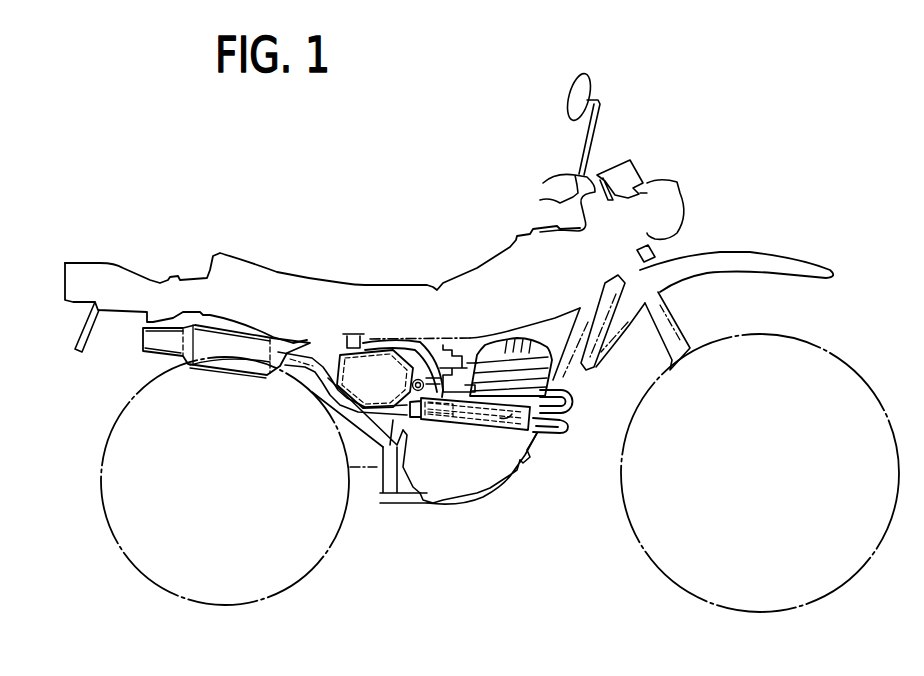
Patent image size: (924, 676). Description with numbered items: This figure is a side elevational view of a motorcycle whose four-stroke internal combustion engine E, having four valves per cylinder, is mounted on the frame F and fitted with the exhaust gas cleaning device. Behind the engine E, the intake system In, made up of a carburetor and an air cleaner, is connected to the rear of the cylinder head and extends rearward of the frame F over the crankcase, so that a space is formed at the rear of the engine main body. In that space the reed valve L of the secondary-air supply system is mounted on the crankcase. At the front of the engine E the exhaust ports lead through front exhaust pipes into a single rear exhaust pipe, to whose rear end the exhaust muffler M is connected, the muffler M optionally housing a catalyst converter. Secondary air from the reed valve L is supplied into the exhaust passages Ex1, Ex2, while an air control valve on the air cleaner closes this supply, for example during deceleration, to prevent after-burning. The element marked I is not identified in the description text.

The exhaust muffler M is at (219, 375).
The internal combustion engine E is at (532, 333).
The intake system In is at (471, 350).
The ignition device I is at (553, 381).
The reed valve L is at (440, 420).
The exhaust passage Ex1 is at (555, 440).
The exhaust passage Ex2 is at (555, 445).
The frame F is at (400, 505).